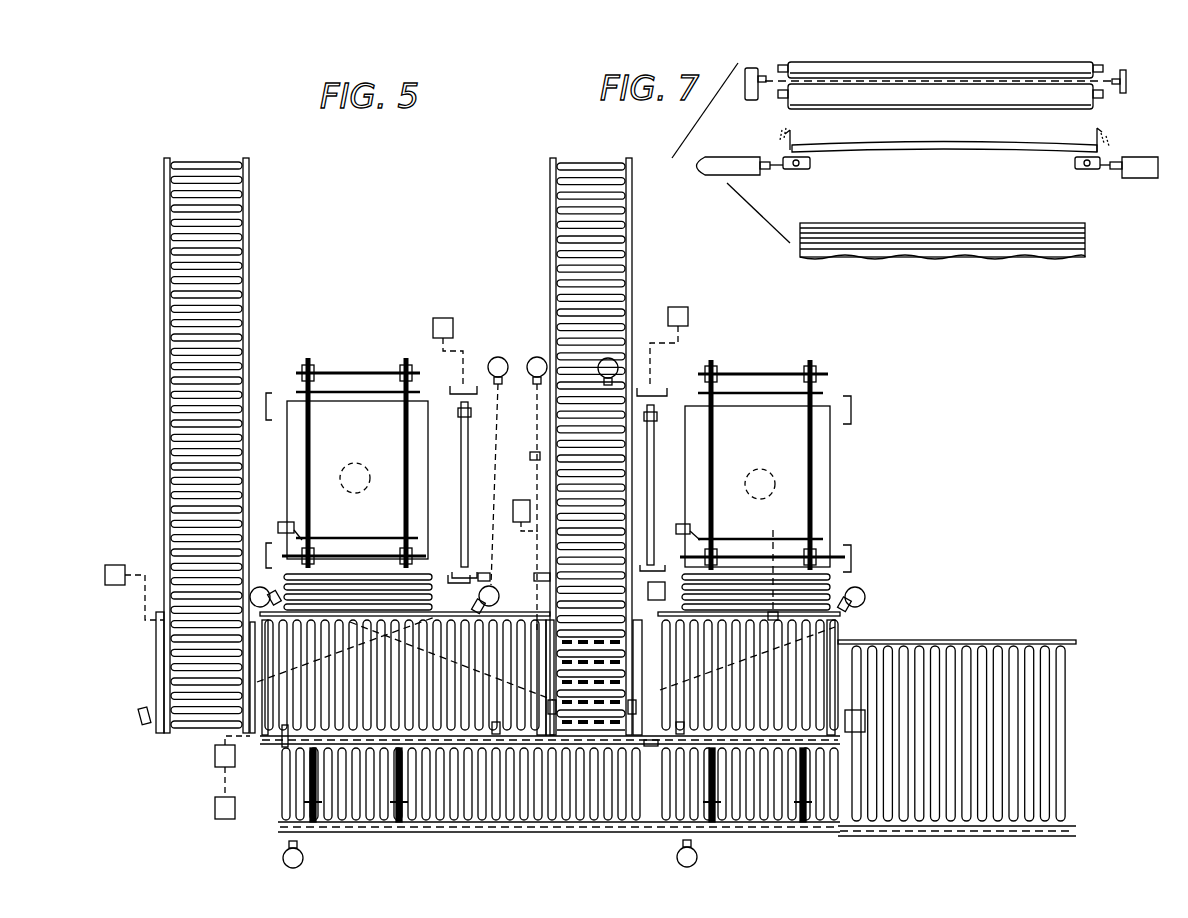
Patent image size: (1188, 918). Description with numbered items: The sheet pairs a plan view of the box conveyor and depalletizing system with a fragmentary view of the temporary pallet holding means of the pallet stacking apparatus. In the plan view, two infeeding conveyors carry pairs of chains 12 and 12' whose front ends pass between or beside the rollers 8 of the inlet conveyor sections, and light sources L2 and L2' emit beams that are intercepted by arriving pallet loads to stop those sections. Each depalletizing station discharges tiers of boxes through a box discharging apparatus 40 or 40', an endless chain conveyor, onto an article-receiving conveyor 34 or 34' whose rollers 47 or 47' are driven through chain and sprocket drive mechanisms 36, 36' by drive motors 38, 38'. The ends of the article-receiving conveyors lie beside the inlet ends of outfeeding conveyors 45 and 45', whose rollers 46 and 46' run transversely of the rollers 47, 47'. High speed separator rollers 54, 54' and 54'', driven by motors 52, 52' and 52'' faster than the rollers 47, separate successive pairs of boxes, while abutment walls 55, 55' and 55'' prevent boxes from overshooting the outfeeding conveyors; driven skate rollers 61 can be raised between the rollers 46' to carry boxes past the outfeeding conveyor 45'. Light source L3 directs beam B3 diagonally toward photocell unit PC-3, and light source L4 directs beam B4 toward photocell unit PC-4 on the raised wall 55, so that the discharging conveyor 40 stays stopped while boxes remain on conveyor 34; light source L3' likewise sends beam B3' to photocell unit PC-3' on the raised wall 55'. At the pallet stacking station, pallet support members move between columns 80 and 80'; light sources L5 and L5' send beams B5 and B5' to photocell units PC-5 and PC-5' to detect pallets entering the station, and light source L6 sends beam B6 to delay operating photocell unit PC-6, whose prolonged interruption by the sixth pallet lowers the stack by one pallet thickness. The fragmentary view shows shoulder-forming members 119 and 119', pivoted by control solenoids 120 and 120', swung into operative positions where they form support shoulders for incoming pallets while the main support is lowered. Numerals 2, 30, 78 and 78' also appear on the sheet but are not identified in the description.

In FIG. 5, the panel / roller element 2 is at (286, 489).
In FIG. 7, the panel / roller element 2 is at (964, 79).
In FIG. 5, the roller 8 is at (500, 700).
In FIG. 5, the chain 12 is at (367, 810).
In FIG. 5, the chain 12' is at (757, 810).
In FIG. 5, the pivot 30 is at (352, 494).
In FIG. 5, the article-receiving conveyor 34 is at (405, 659).
In FIG. 5, the article-receiving conveyor 34' is at (784, 653).
In FIG. 5, the chain and sprocket drive mechanism 36 is at (559, 808).
In FIG. 5, the chain and sprocket drive mechanism 36' is at (955, 756).
In FIG. 5, the drive motor 38 is at (198, 808).
In FIG. 5, the drive motor 38' is at (897, 671).
In FIG. 5, the box discharging apparatus 40 is at (349, 465).
In FIG. 5, the box discharging apparatus 40' is at (765, 465).
In FIG. 5, the outfeeding conveyor 45 is at (172, 445).
In FIG. 5, the outfeeding conveyor 45' is at (629, 446).
In FIG. 5, the roller 46 is at (168, 445).
In FIG. 5, the roller 46' is at (627, 393).
In FIG. 5, the roller 47 is at (264, 710).
In FIG. 5, the roller 47' is at (867, 672).
In FIG. 5, the motor 52 is at (202, 777).
In FIG. 5, the motor 52' is at (665, 567).
In FIG. 5, the motor 52'' is at (526, 499).
In FIG. 5, the separator roller 54 is at (495, 764).
In FIG. 5, the separator roller 54' is at (693, 802).
In FIG. 5, the separator roller 54'' is at (541, 744).
In FIG. 5, the abutment wall 55 is at (643, 744).
In FIG. 5, the abutment wall 55' is at (568, 744).
In FIG. 5, the abutment wall 55'' is at (130, 672).
In FIG. 5, the driven skate roller 61 is at (612, 726).
In FIG. 5, the cylinder 78 is at (450, 484).
In FIG. 5, the cylinder 78' is at (670, 485).
In FIG. 5, the column 80 is at (561, 448).
In FIG. 5, the column 80' is at (667, 351).
In FIG. 7, the shoulder-forming member 119 is at (824, 130).
In FIG. 7, the shoulder-forming member 119' is at (1072, 133).
In FIG. 7, the control solenoid 120 is at (754, 144).
In FIG. 7, the control solenoid 120' is at (1116, 186).
In FIG. 5, the light beam B3 is at (191, 695).
In FIG. 5, the light beam B3' is at (779, 562).
In FIG. 5, the light beam B4 is at (477, 586).
In FIG. 5, the light beam B5 is at (467, 419).
In FIG. 5, the light beam B5' is at (665, 420).
In FIG. 5, the light beam B6 is at (538, 455).
In FIG. 5, the light source L2 is at (294, 870).
In FIG. 5, the light source L2' is at (689, 869).
In FIG. 5, the light source L3 is at (522, 560).
In FIG. 5, the light source L3' is at (873, 577).
In FIG. 5, the light source L4 is at (251, 591).
In FIG. 5, the light source L5 is at (493, 450).
In FIG. 5, the light source L5' is at (641, 337).
In FIG. 5, the light source L6 is at (540, 357).
In FIG. 5, the photocell unit PC-3 is at (109, 725).
In FIG. 5, the photocell unit PC-3' is at (514, 796).
In FIG. 5, the photocell unit PC-4 is at (632, 714).
In FIG. 5, the photocell unit PC-5 is at (431, 531).
In FIG. 5, the photocell unit PC-5' is at (706, 514).
In FIG. 5, the delay operating photocell unit PC-6 is at (506, 597).